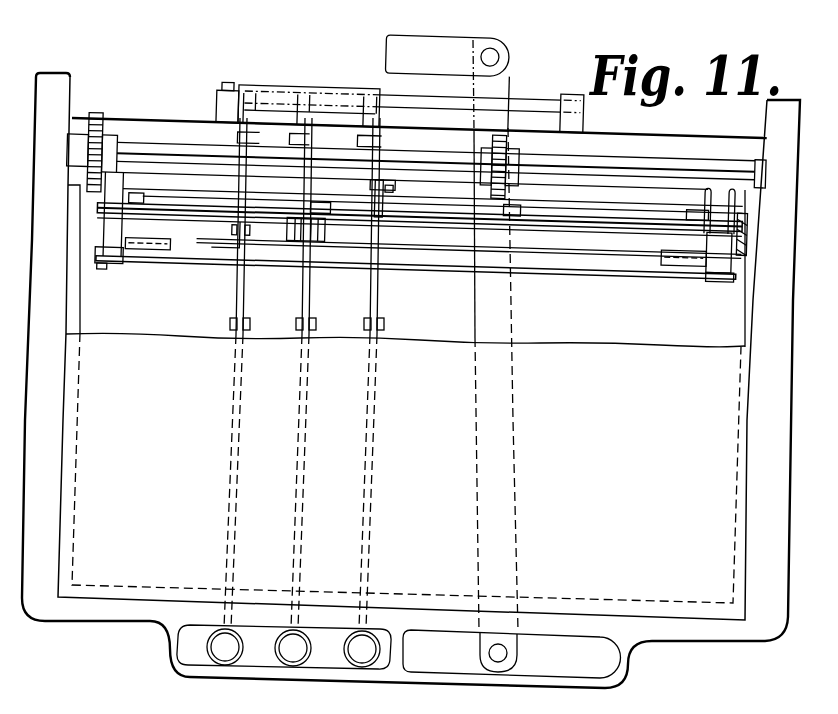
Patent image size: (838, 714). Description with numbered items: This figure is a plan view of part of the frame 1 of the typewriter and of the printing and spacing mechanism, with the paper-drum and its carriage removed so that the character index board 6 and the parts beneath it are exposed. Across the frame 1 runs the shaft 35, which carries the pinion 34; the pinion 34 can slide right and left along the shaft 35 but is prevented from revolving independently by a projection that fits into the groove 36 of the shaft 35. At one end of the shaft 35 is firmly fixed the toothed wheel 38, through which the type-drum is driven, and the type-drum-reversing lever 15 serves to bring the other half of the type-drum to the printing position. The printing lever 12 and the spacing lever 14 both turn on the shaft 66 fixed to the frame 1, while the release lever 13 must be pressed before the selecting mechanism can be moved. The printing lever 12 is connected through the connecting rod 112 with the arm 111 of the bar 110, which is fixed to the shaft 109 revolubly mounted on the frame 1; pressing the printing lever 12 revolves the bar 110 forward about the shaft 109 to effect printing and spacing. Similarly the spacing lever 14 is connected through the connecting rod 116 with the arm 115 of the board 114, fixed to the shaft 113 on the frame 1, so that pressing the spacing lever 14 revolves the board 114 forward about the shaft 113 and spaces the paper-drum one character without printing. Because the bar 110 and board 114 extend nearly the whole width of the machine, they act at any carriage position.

The frame 1 is at (411, 380).
The character index board 6 is at (405, 468).
The printing lever 12 is at (233, 485).
The release lever 13 is at (298, 484).
The spacing lever 14 is at (370, 484).
The type-drum-reversing lever 15 is at (507, 488).
The pinion 34 is at (493, 133).
The shaft 35 is at (727, 163).
The groove 36 is at (651, 170).
The toothed wheel 38 is at (98, 116).
The shaft 66 is at (447, 100).
The shaft 109 is at (100, 248).
The bar 110 is at (330, 258).
The arm 111 is at (245, 250).
The connecting rod 112 is at (243, 243).
The shaft 113 is at (207, 203).
The board 114 is at (193, 203).
The arm 115 is at (392, 198).
The connecting rod 116 is at (388, 192).